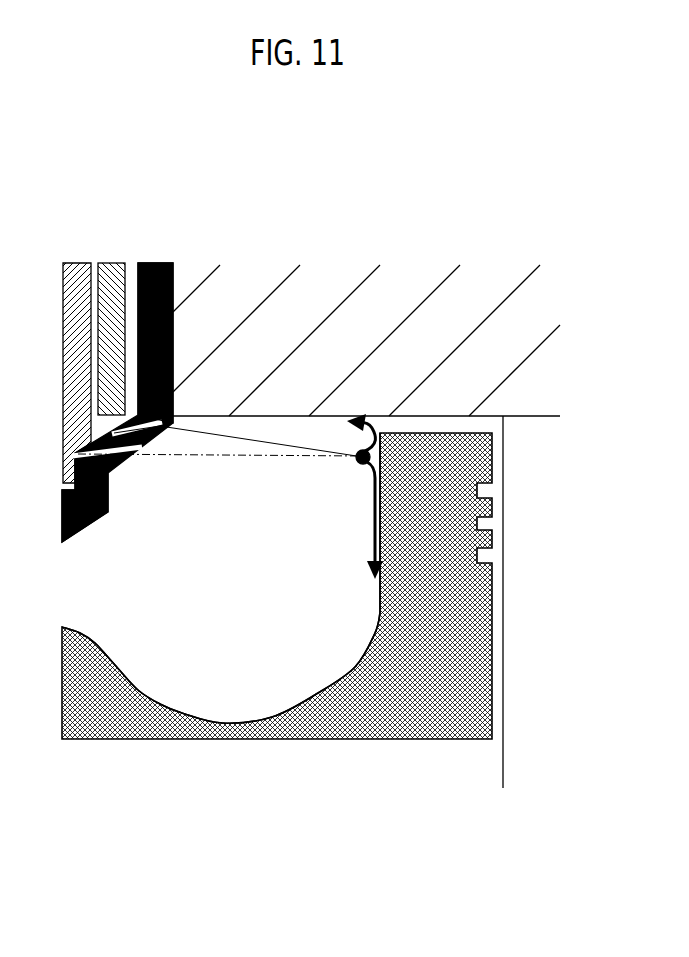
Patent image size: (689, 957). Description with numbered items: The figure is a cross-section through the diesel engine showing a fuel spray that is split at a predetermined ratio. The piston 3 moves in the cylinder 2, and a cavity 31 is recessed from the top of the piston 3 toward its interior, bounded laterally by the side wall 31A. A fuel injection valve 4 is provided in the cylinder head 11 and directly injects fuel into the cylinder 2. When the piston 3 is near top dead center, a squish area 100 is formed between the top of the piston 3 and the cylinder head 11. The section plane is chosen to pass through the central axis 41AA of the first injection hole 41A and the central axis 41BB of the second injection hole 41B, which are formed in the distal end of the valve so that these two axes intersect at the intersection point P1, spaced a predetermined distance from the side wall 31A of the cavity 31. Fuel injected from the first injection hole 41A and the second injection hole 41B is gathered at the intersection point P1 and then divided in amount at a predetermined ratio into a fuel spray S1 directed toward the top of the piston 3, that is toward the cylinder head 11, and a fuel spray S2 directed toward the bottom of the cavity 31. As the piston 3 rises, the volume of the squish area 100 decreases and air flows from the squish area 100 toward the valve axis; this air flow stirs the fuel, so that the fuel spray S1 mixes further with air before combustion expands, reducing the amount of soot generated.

The cylinder 2 is at (498, 748).
The piston 3 is at (420, 740).
The fuel injection valve 4 is at (78, 234).
The cylinder head 11 is at (542, 324).
The cavity 31 is at (240, 668).
The side wall 31A is at (373, 588).
The first injection hole 41A is at (172, 440).
The central axis of the first injection hole 41AA is at (207, 422).
The second injection hole 41B is at (135, 455).
The central axis of the second injection hole 41BB is at (240, 455).
The squish area 100 is at (442, 424).
The intersection point P1 is at (362, 465).
The fuel spray directed toward the top of the piston S1 is at (370, 437).
The fuel spray directed toward the bottom of the piston S2 is at (375, 515).